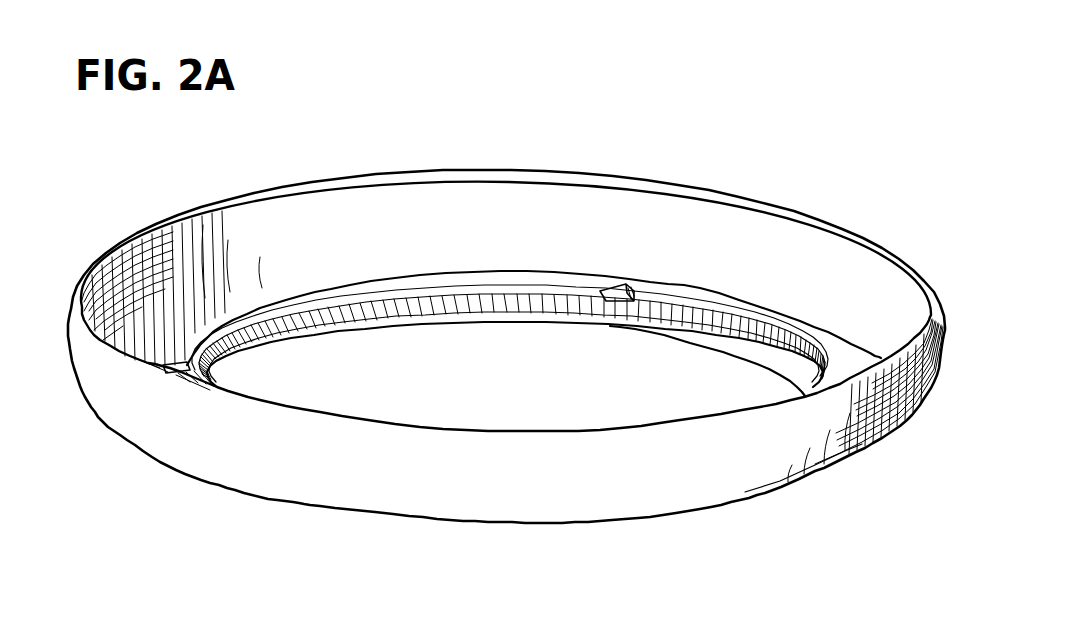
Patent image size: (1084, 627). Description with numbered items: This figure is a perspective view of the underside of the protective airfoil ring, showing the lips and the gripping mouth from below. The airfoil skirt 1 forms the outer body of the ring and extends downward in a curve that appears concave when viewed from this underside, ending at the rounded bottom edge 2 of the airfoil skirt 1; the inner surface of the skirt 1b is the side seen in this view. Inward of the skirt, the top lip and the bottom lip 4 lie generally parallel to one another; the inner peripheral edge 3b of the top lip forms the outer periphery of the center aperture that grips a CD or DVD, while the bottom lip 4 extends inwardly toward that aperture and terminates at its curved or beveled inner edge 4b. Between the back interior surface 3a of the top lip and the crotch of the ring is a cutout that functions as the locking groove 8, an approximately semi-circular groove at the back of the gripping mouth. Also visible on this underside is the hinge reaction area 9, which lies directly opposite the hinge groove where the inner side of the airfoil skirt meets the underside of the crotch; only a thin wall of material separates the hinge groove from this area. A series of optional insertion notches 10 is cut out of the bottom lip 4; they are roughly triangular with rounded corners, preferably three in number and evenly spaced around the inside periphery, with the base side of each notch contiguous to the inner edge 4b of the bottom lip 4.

The airfoil skirt 1 is at (613, 487).
The inner peripheral wall of ring body 1b is at (410, 237).
The bottom edge of the airfoil skirt 2 is at (307, 187).
The interior surface of the top lip 3a is at (763, 350).
The inner peripheral edge of the top lip 3b is at (803, 357).
The bottom lip 4 is at (525, 280).
The inner edge of the bottom lip 4b is at (569, 295).
The locking groove 8 is at (632, 286).
The hinge reaction area 9 is at (150, 348).
The insertion notches 10 is at (175, 364).